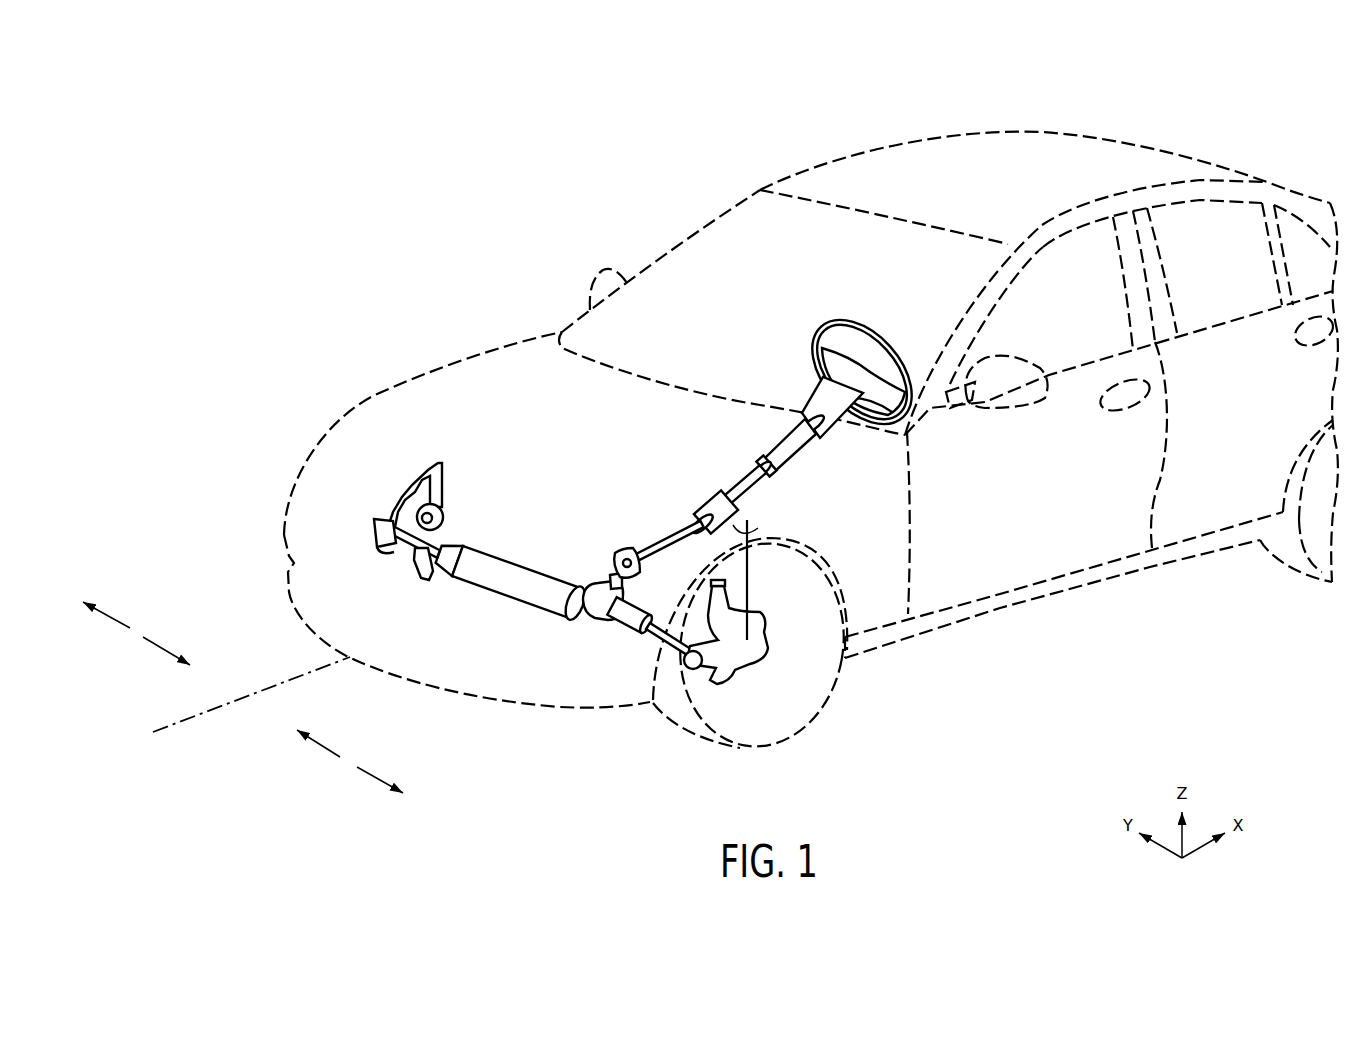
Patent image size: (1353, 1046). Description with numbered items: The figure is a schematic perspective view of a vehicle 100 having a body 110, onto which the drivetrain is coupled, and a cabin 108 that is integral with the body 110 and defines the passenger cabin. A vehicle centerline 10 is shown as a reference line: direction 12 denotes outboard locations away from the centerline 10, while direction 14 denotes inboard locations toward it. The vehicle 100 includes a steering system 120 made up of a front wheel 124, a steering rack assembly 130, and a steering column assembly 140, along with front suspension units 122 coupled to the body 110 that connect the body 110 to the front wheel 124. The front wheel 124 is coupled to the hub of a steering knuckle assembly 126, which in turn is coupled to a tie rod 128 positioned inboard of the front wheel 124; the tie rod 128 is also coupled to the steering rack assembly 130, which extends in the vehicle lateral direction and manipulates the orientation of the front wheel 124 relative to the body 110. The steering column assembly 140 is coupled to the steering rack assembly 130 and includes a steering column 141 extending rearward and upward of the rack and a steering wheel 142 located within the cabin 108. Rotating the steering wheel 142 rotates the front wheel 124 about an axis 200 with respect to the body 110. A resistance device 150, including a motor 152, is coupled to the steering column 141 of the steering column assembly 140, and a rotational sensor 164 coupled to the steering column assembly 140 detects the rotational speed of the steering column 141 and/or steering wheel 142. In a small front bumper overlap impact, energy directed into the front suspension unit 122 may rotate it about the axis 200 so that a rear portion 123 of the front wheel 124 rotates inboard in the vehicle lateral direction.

The vehicle centerline 10 is at (200, 713).
The direction 12 is at (112, 612).
The direction 14 is at (165, 646).
The vehicle 100 is at (465, 194).
The cabin 108 is at (950, 395).
The body 110 is at (594, 418).
The steering system 120 is at (770, 433).
The front suspension unit 122 is at (802, 647).
The rear portion 123 is at (809, 614).
The front wheel 124 is at (740, 747).
The steering knuckle assembly 126 is at (571, 544).
The tie rod 128 is at (541, 578).
The steering rack assembly 130 is at (543, 556).
The steering column assembly 140 is at (808, 428).
The steering column 141 is at (686, 530).
The steering wheel 142 is at (849, 331).
The resistance device 150 is at (713, 513).
The motor 152 is at (745, 484).
The rotational sensor 164 is at (801, 552).
The axis 200 is at (763, 523).